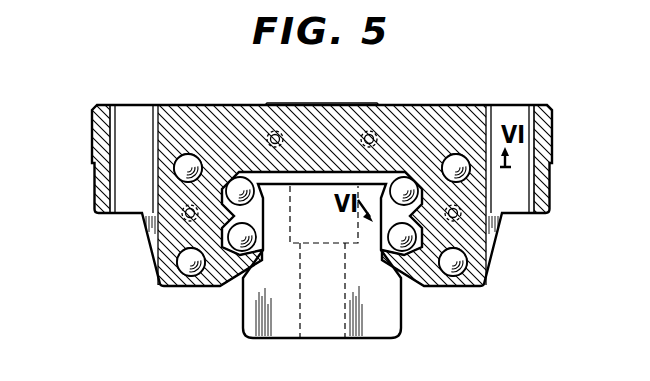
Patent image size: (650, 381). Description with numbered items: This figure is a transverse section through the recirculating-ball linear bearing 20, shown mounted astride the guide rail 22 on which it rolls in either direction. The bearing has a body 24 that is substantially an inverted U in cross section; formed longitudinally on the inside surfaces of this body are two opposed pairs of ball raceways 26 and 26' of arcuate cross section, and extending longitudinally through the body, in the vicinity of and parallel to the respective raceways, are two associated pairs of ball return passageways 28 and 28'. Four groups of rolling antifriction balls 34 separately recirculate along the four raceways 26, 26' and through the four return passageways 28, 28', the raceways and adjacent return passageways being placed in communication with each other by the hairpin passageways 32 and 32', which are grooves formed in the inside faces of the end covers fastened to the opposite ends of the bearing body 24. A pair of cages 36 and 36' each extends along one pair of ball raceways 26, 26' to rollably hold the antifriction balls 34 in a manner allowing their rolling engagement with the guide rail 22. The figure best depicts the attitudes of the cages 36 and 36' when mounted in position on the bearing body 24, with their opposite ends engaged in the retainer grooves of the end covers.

The linear bearing 20 is at (558, 101).
The guide rail 22 is at (289, 330).
The body 24 is at (468, 126).
The ball raceway 26 is at (199, 210).
The ball raceway 26' is at (437, 203).
The ball return passageway 28 is at (137, 200).
The ball return passageway 28' is at (521, 192).
The hairpin passageway 32 is at (216, 192).
The hairpin passageway 32' is at (453, 154).
The antifriction balls 34 is at (243, 176).
The cage 36 is at (177, 252).
The cage 36' is at (430, 286).